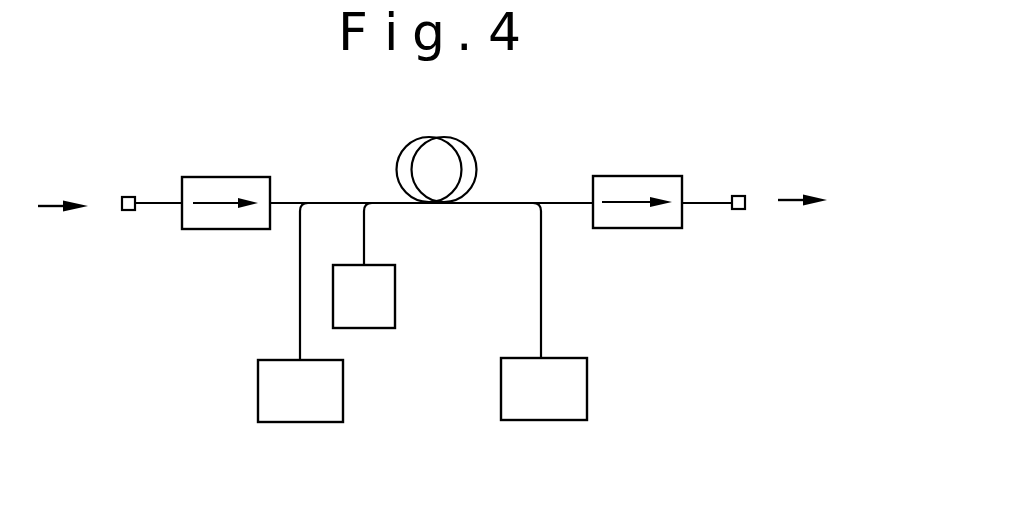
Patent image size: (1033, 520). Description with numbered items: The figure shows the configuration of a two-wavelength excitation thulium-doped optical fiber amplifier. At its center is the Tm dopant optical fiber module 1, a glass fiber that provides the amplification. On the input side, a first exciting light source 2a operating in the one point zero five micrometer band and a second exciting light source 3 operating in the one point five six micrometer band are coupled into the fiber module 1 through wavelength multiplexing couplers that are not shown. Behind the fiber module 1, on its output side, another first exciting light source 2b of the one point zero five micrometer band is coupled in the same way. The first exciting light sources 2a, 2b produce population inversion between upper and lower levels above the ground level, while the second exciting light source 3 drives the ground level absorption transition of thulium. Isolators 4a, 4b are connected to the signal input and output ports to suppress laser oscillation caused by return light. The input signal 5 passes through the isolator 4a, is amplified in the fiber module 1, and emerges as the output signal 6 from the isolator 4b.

The Tm dopant optical fiber module 1 is at (410, 142).
The first exciting light source 2a is at (343, 393).
The first exciting light source 2b is at (587, 392).
The second exciting light source 3 is at (395, 300).
The isolator 4a is at (230, 177).
The isolator 4b is at (640, 176).
The input signal 5 is at (50, 203).
The output signal 6 is at (788, 198).